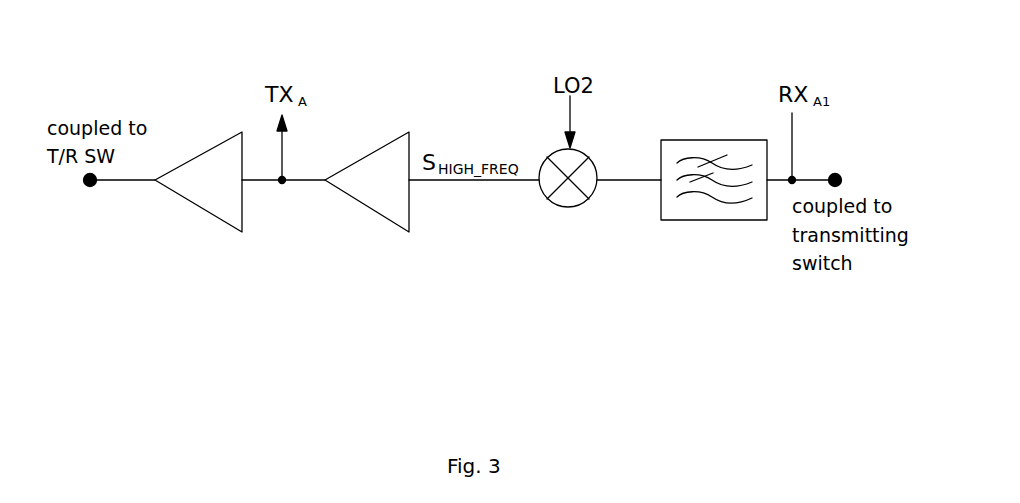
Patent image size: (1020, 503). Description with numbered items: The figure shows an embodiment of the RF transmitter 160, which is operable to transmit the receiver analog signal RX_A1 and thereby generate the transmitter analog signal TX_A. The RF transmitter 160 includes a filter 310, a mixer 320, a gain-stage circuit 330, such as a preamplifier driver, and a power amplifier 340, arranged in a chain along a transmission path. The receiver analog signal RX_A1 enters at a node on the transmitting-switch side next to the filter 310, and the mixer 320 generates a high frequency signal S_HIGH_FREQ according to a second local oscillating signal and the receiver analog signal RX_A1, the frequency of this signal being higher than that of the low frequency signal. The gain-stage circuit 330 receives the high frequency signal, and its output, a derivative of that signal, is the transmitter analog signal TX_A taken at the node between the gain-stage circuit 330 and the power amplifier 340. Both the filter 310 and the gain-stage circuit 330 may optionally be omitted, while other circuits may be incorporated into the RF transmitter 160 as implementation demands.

The RF transmitter 160 is at (72, 333).
The filter 310 is at (717, 140).
The mixer 320 is at (567, 207).
The gain-stage circuit 330 is at (372, 152).
The power amplifier 340 is at (205, 153).